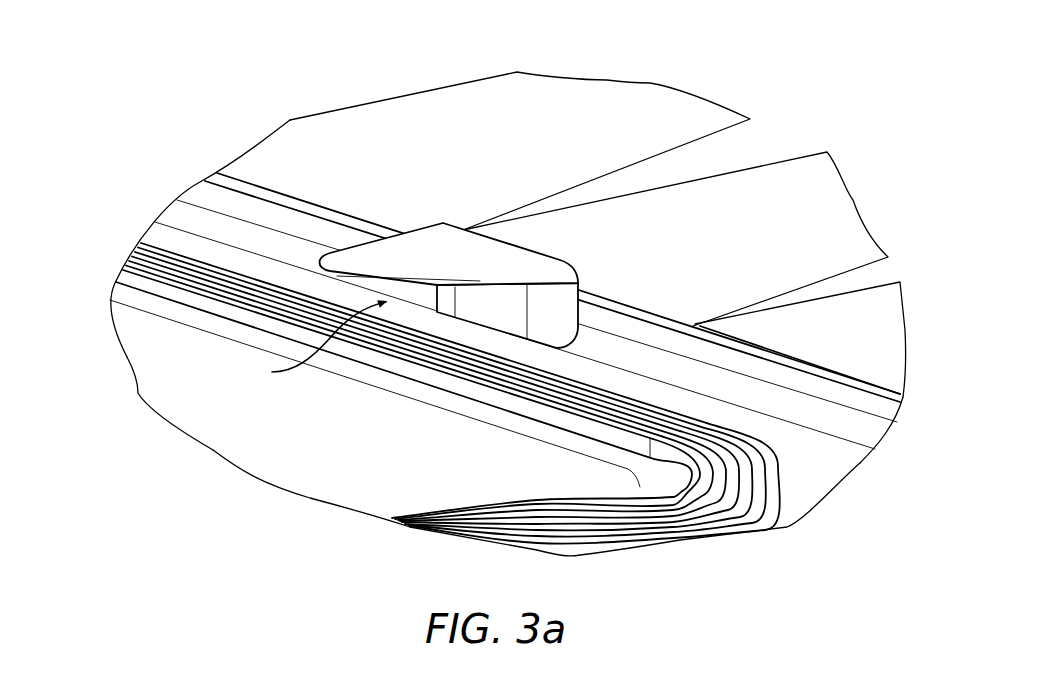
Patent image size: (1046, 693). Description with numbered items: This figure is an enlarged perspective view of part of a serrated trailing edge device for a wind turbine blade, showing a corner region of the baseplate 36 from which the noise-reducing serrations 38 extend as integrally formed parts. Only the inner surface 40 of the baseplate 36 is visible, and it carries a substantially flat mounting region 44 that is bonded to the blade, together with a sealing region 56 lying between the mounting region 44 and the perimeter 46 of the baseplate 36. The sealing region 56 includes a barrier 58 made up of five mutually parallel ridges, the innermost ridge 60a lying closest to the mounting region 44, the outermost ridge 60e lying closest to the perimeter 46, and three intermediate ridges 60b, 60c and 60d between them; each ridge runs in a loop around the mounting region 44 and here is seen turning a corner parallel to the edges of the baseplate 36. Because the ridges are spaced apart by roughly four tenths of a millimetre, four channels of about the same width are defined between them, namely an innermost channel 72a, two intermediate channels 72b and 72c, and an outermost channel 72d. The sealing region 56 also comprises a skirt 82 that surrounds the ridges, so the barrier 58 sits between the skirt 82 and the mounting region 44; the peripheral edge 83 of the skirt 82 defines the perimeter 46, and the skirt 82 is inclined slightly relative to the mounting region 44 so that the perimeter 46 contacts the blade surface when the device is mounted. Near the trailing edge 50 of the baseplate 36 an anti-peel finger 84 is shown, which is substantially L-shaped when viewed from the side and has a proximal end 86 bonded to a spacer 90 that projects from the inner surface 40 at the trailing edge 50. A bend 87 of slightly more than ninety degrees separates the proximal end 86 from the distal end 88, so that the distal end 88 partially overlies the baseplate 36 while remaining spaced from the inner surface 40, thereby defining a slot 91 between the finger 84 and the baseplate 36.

The baseplate 36 is at (126, 358).
The serrations 38 is at (623, 85).
The inner surface 40 is at (137, 394).
The mounting region 44 is at (278, 482).
The perimeter 46 is at (526, 324).
The peripheral edge 83 is at (830, 410).
The trailing edge 50 is at (890, 435).
The sealing region 56 is at (412, 524).
The barrier 58 is at (393, 410).
The innermost ridge 60a is at (395, 353).
The intermediate ridge 60b is at (440, 363).
The intermediate ridge 60c is at (485, 367).
The intermediate ridge 60d is at (533, 375).
The outermost ridge 60e is at (577, 380).
The innermost channel 72a is at (700, 480).
The intermediate channel 72b is at (725, 480).
The intermediate channel 72c is at (740, 482).
The outermost channel 72d is at (775, 522).
The skirt 82 is at (860, 462).
The finger 84 is at (482, 260).
The proximal end 86 is at (580, 293).
The bend 87 is at (511, 242).
The distal end 88 is at (321, 262).
The spacer 90 is at (600, 318).
The slot 91 is at (316, 345).